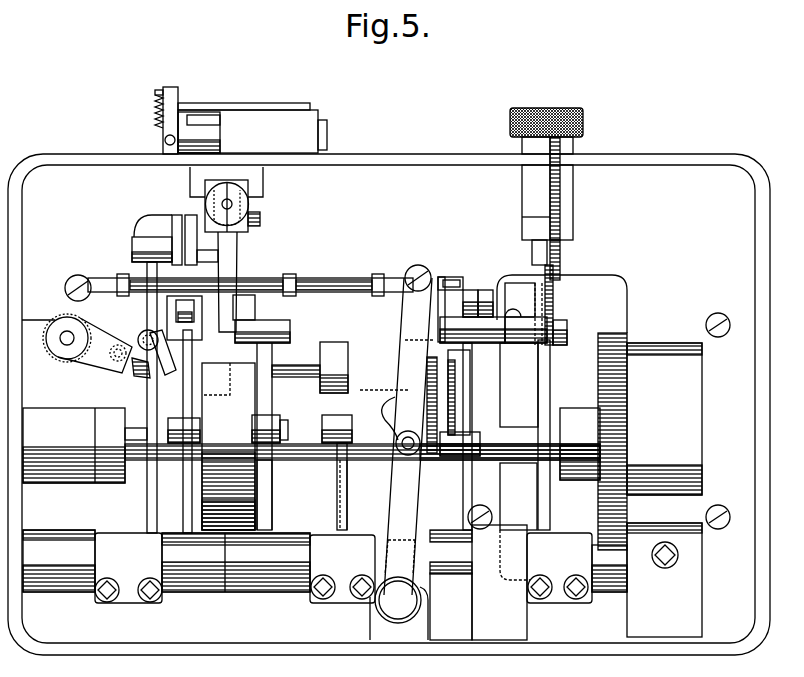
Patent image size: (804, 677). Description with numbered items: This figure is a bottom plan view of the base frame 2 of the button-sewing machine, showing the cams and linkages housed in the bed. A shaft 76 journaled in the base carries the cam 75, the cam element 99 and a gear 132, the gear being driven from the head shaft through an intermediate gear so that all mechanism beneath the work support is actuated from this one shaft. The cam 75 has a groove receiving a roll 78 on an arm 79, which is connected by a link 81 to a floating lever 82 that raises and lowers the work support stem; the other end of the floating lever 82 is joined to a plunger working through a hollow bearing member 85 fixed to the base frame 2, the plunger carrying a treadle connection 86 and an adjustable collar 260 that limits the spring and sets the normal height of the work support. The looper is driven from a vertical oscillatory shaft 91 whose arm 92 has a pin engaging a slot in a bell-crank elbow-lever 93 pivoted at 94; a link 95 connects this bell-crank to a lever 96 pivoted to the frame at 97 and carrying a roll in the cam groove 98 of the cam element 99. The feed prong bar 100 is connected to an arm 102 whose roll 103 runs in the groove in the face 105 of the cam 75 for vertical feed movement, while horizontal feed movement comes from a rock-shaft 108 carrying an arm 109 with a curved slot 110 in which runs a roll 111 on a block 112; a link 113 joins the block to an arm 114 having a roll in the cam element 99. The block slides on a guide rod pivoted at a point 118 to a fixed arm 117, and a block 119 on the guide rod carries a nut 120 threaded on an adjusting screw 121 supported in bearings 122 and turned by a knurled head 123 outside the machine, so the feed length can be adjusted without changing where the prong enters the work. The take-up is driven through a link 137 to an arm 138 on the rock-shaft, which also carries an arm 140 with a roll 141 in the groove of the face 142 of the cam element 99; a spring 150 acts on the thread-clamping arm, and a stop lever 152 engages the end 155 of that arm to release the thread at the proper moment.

The base frame 2 is at (703, 153).
The cam 75 is at (256, 513).
The shaft 76 is at (522, 462).
The roll 78 is at (248, 418).
The arm 79 is at (265, 493).
The link 81 is at (248, 323).
The floating lever 82 is at (232, 300).
The bearing member 85 is at (258, 186).
The connection 86 is at (228, 200).
The vertical oscillatory shaft 91 is at (147, 330).
The arm 92 is at (135, 342).
The bell-crank elbow-lever 93 is at (108, 358).
The pivot 94 is at (62, 332).
The link 95 is at (307, 282).
The lever 96 is at (410, 318).
The pivot 97 is at (390, 607).
The cam groove 98 is at (396, 398).
The cam element 99 is at (350, 484).
The bar 100 is at (170, 302).
The arm 102 is at (200, 487).
The roll 103 is at (192, 420).
The cam face 105 is at (200, 497).
The rock-shaft 108 is at (300, 360).
The arm 109 is at (442, 277).
The curved slot 110 is at (455, 278).
The roll 111 is at (468, 292).
The block 112 is at (483, 295).
The link 113 is at (473, 343).
The arm 114 is at (460, 403).
The fixed arm 117 is at (548, 378).
The pivotal point 118 is at (565, 325).
The block 119 is at (515, 285).
The nut 120 is at (568, 283).
The adjusting screw 121 is at (556, 272).
The bearings 122 is at (575, 208).
The knurled head 123 is at (558, 107).
The gear 132 is at (627, 338).
The link 137 is at (166, 240).
The arm 138 is at (147, 388).
The arm 140 is at (340, 508).
The roll 141 is at (350, 418).
The cam face 142 is at (350, 467).
The spring 150 is at (153, 107).
The stop lever 152 is at (240, 110).
The end of arm 155 is at (176, 86).
The collar 260 is at (245, 203).